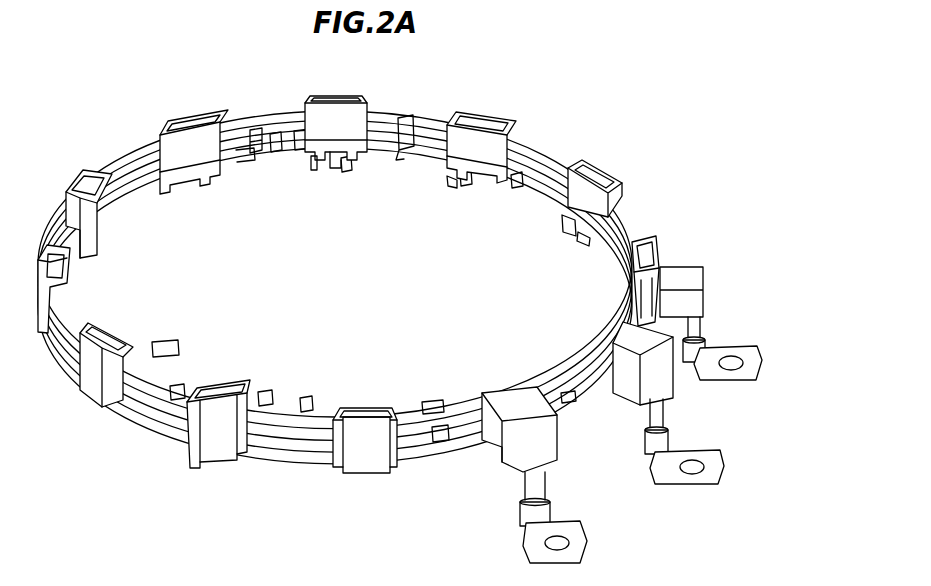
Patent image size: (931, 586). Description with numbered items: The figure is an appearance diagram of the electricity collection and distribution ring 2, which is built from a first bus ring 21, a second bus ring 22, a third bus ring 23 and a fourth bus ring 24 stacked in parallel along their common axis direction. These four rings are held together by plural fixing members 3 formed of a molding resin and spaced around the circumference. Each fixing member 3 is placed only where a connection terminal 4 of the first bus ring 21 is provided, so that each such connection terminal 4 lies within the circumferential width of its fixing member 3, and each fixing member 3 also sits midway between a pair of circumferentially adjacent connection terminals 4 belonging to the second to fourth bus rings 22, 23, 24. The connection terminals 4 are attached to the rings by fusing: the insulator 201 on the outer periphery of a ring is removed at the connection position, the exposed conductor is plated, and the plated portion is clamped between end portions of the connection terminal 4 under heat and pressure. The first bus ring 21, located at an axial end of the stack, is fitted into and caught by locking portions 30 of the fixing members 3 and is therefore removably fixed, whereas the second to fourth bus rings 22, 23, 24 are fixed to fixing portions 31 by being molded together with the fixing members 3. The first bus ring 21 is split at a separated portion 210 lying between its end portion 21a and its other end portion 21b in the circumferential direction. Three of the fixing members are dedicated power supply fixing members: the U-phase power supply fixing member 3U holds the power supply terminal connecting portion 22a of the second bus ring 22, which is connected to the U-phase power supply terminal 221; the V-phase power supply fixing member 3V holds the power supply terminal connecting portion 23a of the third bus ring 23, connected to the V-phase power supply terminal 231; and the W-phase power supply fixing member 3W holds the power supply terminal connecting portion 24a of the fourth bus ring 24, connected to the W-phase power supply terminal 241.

The electricity collection and distribution ring 2 is at (599, 103).
The fixing member 3 is at (588, 158).
The U-phase power supply fixing member 3U is at (685, 270).
The V-phase power supply fixing member 3V is at (672, 386).
The W-phase power supply fixing member 3W is at (520, 462).
The connection terminal 4 is at (567, 223).
The first bus ring 21 is at (266, 416).
The end portion 21a is at (293, 147).
The other end portion 21b is at (229, 146).
The second bus ring 22 is at (275, 429).
The third bus ring 23 is at (284, 441).
The fourth bus ring 24 is at (294, 454).
The power supply terminal connecting portion 22a is at (701, 326).
The power supply terminal connecting portion 23a is at (665, 415).
The power supply terminal connecting portion 24a is at (548, 479).
The locking portion 30 is at (580, 241).
The fixing portion 31 is at (334, 111).
The insulator 201 is at (262, 392).
The separated portion 210 is at (247, 162).
The U-phase power supply terminal 221 is at (750, 351).
The V-phase power supply terminal 231 is at (720, 456).
The W-phase power supply terminal 241 is at (578, 538).